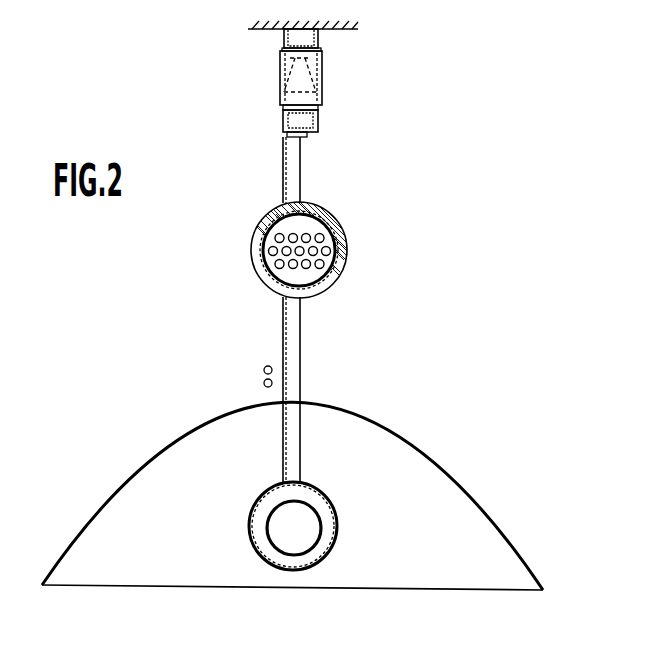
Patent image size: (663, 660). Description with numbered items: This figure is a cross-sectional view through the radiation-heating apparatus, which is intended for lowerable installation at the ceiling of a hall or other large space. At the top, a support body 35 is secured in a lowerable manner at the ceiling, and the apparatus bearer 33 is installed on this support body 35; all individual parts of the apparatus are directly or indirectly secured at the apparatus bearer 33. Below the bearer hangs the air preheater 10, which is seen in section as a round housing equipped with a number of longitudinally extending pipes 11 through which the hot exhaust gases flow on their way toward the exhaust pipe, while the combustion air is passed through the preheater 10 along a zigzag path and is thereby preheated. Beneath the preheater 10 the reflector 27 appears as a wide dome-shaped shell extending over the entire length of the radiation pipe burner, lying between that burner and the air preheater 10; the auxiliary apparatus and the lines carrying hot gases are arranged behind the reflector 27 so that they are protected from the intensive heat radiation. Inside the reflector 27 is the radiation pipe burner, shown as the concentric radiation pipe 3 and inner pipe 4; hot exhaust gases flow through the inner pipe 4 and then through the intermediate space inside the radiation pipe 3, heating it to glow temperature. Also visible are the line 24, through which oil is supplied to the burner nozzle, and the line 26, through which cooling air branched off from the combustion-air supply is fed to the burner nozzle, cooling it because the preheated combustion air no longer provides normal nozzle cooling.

The support body 35 is at (285, 40).
The apparatus bearer 33 is at (283, 118).
The air preheater 10 is at (346, 252).
The longitudinally extending pipes 11 is at (322, 266).
The line 24 is at (264, 369).
The line 26 is at (264, 383).
The reflector 27 is at (379, 422).
The radiation pipe 3 is at (327, 494).
The inner pipe 4 is at (322, 528).